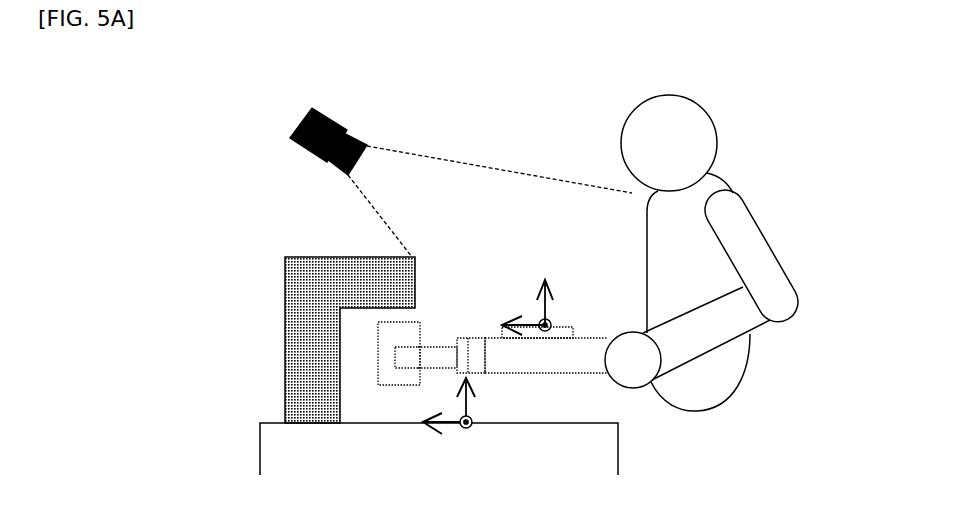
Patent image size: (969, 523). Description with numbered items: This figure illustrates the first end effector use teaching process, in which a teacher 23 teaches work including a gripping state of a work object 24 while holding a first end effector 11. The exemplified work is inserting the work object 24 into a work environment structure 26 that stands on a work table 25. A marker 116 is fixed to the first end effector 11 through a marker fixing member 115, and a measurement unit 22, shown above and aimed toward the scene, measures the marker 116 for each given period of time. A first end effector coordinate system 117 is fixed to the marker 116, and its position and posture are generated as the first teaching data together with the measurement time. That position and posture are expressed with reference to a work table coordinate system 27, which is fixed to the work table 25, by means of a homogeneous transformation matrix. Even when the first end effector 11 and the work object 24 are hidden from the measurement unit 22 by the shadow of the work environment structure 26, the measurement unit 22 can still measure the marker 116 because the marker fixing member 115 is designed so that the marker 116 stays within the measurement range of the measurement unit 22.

The first end effector 11 is at (537, 373).
The measurement unit 22 is at (323, 114).
The teacher 23 is at (705, 110).
The work object 24 is at (378, 357).
The work table 25 is at (618, 448).
The work environment structure 26 is at (285, 282).
The work table coordinate system 27 is at (478, 428).
The marker fixing member 115 is at (485, 338).
The marker 116 is at (573, 327).
The first end effector coordinate system 117 is at (537, 300).